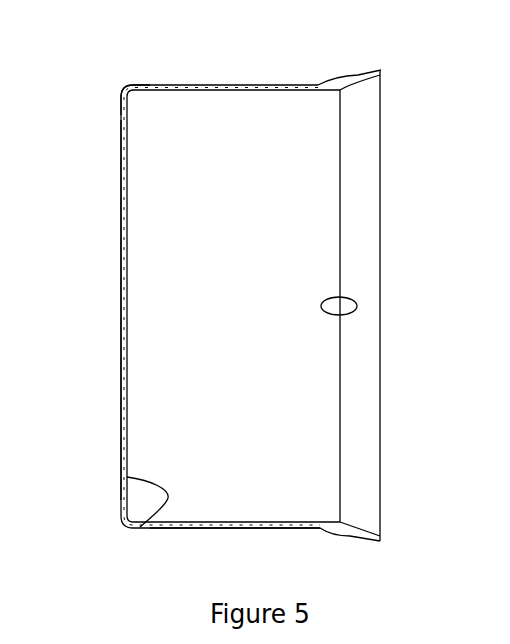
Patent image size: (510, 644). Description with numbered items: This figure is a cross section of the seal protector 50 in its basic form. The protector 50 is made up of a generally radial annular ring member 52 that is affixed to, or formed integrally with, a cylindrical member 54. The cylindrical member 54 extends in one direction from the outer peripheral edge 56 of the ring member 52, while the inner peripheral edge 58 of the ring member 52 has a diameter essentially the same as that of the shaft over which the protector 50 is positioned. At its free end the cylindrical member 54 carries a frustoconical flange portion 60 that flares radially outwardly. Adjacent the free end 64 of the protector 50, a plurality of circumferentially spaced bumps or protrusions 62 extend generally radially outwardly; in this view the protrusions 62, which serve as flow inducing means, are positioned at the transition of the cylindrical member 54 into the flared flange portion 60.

The protector 50 is at (273, 86).
The annular ring member 52 is at (140, 527).
The cylindrical member 54 is at (237, 540).
The outer peripheral edge 56 is at (128, 87).
The inner peripheral edge 58 is at (122, 161).
The frustoconical flange portion 60 is at (370, 80).
The protrusions 62 is at (342, 78).
The free end 64 is at (342, 484).